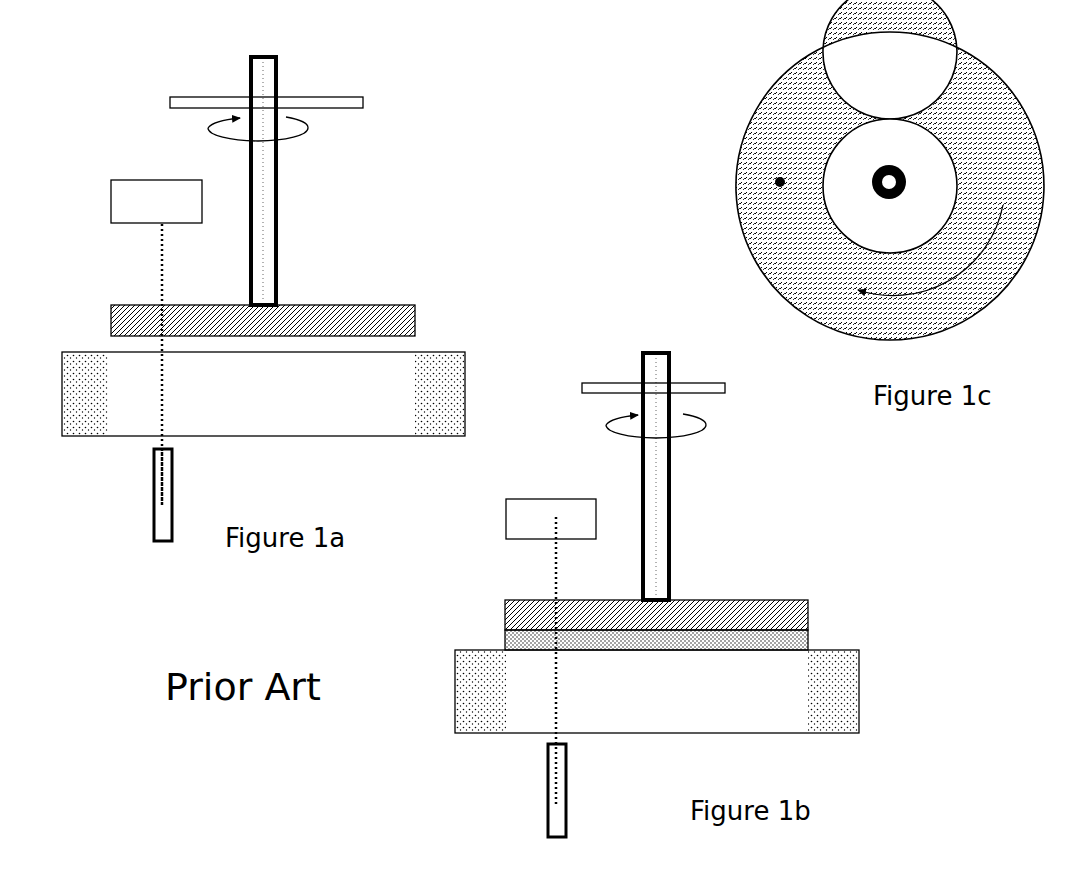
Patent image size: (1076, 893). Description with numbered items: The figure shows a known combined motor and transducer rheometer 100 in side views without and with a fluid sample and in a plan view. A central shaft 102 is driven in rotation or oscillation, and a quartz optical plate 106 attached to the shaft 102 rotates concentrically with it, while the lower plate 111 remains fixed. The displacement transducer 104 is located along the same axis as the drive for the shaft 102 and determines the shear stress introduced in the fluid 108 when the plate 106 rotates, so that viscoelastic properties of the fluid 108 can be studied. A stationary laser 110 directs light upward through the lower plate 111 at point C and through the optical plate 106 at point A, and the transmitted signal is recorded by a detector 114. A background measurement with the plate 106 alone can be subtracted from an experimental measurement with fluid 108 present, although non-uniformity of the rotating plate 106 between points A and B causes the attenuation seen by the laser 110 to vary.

In FIG. 1A, the CMT rheometer 100 is at (605, 214).
In FIG. 1A, the shaft 102 is at (262, 260).
In FIG. 1B, the shaft 102 is at (656, 550).
In FIG. 1C, the shaft 102 is at (876, 175).
In FIG. 1A, the measuring transducer 104 is at (323, 89).
In FIG. 1B, the measuring transducer 104 is at (697, 393).
In FIG. 1C, the measuring transducer 104 is at (857, 227).
In FIG. 1A, the quartz plate 106 is at (415, 318).
In FIG. 1B, the quartz plate 106 is at (808, 614).
In FIG. 1C, the quartz plate 106 is at (803, 125).
In FIG. 1B, the fluid 108 is at (802, 637).
In FIG. 1A, the stationary laser 110 is at (174, 477).
In FIG. 1B, the stationary laser 110 is at (567, 770).
In FIG. 1A, the lower plate 111 is at (422, 383).
In FIG. 1B, the lower plate 111 is at (828, 685).
In FIG. 1A, the detector 114 is at (137, 180).
In FIG. 1B, the detector 114 is at (523, 525).